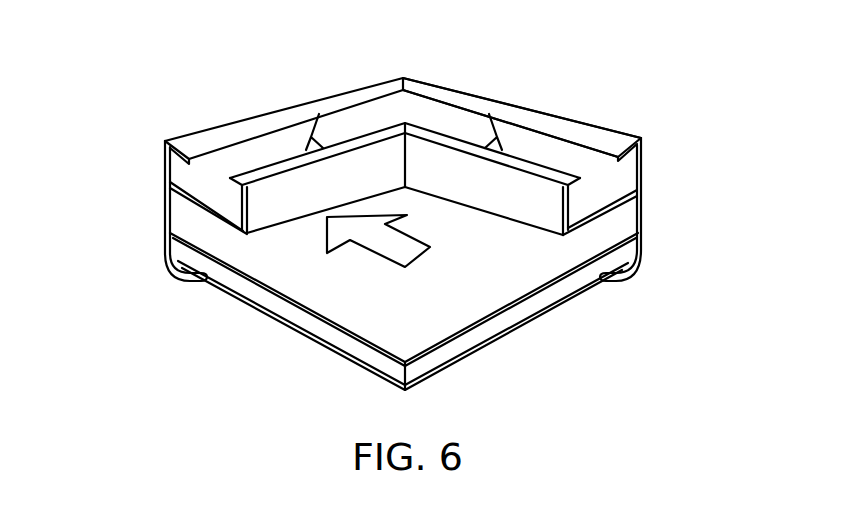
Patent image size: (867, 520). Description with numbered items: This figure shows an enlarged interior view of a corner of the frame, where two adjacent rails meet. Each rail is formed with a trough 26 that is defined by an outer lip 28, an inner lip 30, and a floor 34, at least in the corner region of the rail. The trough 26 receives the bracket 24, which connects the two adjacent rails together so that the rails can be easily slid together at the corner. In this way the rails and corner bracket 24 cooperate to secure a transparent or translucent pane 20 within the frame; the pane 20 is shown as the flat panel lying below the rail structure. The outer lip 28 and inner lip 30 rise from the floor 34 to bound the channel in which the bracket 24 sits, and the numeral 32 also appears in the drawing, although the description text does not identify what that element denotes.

The pane 20 is at (312, 293).
The bracket 24 is at (428, 102).
The trough 26 is at (600, 203).
The outer lip 28 is at (607, 140).
The inner lip 30 is at (577, 182).
The bottom flange 32 is at (203, 218).
The floor 34 is at (205, 199).